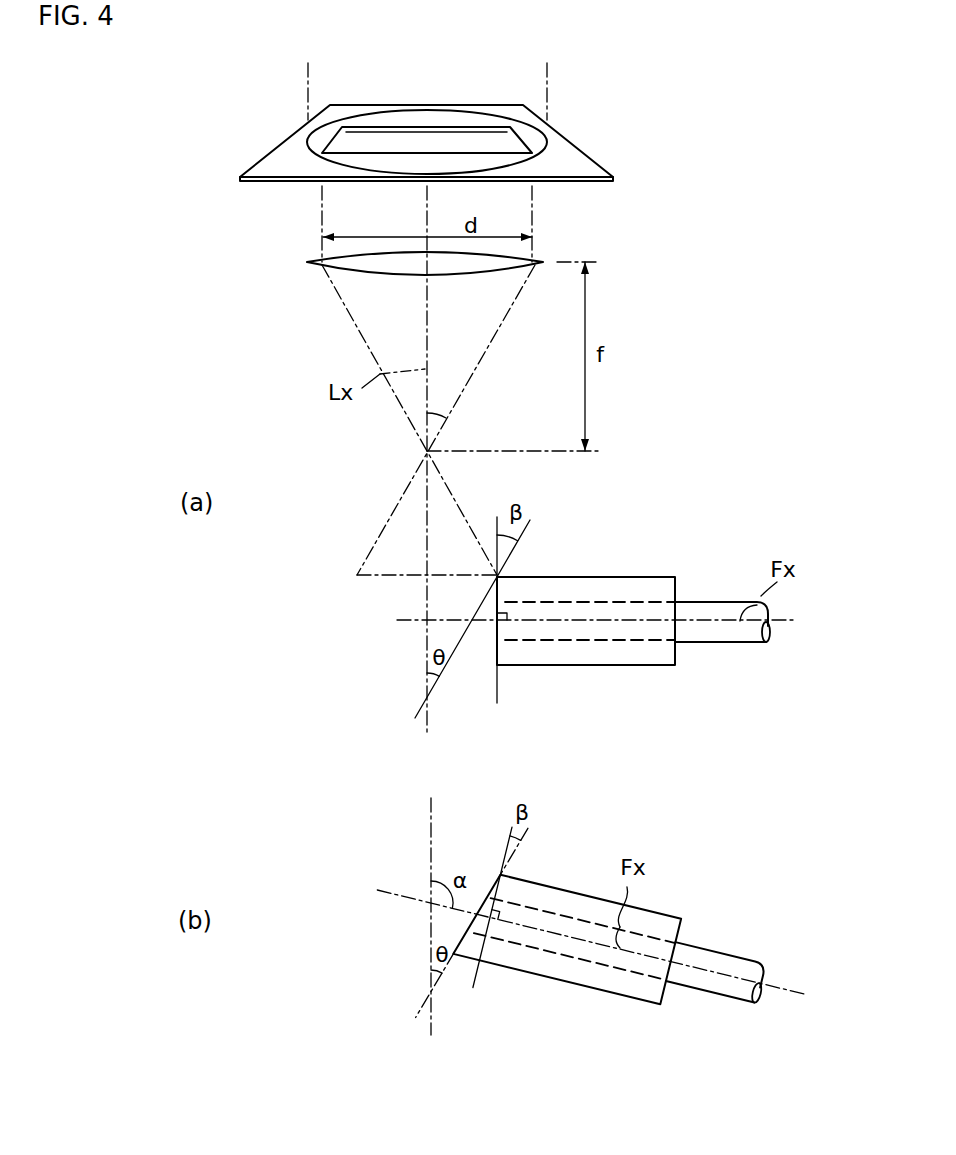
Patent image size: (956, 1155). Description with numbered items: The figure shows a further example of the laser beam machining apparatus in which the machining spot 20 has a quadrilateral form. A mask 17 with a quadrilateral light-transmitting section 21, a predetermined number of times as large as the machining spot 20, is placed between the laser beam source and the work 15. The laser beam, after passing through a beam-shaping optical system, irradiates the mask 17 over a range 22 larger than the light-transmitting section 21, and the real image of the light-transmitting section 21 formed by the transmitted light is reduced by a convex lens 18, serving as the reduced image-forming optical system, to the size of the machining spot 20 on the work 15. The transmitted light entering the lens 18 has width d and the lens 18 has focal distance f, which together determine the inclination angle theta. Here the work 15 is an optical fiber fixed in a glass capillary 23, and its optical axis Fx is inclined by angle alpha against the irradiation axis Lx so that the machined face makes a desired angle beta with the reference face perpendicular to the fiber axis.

The work 15 is at (712, 602).
The mask 17 is at (560, 155).
The convex lens 18 is at (383, 273).
The machining spot 20 is at (372, 582).
The light-transmitting section 21 is at (422, 140).
The range 22 is at (492, 115).
The glass capillary 23 is at (547, 976).